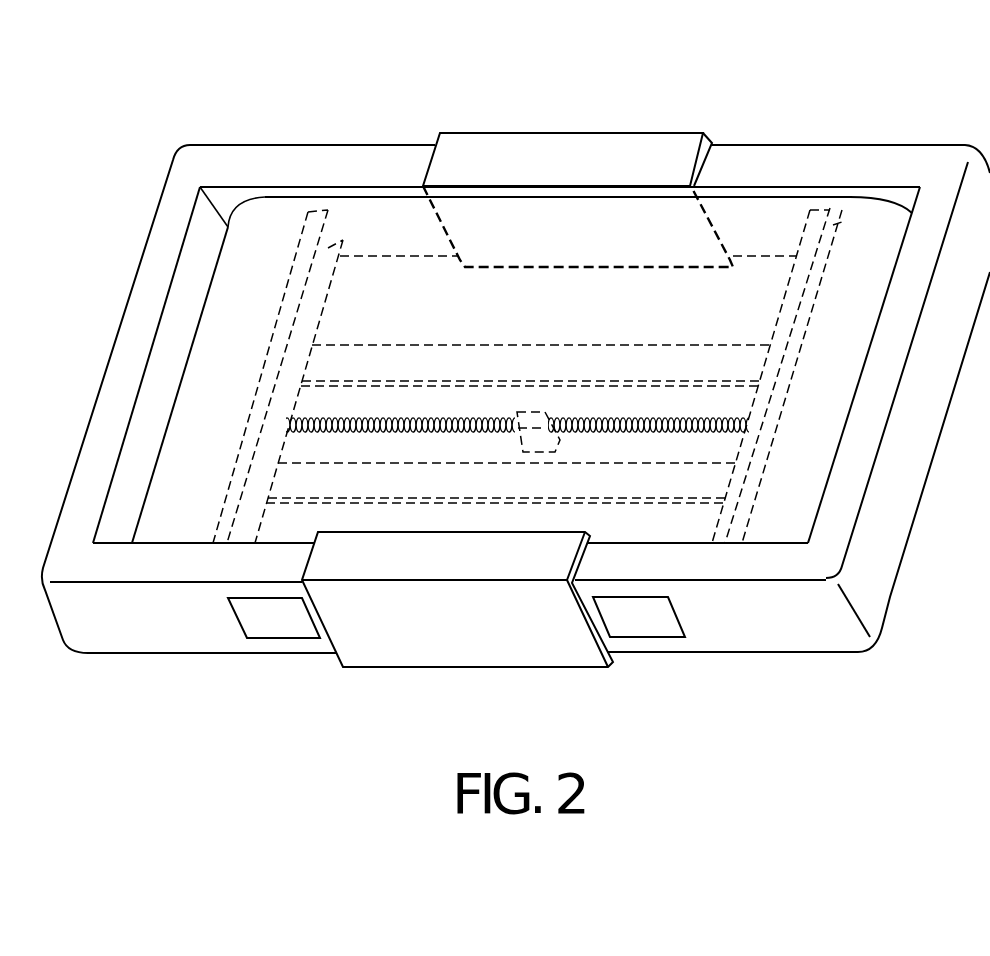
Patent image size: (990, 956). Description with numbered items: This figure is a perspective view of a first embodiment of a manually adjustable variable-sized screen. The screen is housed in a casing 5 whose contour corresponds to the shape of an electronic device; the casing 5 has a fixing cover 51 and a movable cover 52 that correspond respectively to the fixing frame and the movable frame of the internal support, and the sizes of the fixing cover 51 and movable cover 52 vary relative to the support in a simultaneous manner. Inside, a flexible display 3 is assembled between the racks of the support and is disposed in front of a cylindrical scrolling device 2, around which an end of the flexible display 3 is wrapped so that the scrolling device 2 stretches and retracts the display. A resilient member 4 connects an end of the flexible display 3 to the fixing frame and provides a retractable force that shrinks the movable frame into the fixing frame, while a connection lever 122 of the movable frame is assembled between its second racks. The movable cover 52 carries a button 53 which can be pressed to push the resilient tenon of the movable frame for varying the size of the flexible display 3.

The scrolling device 2 is at (190, 405).
The flexible display 3 is at (373, 208).
The resilient member 4 is at (311, 450).
The casing 5 is at (572, 111).
The fixing cover 51 is at (682, 155).
The movable cover 52 is at (828, 152).
The button 53 is at (652, 622).
The connection lever 122 is at (343, 240).